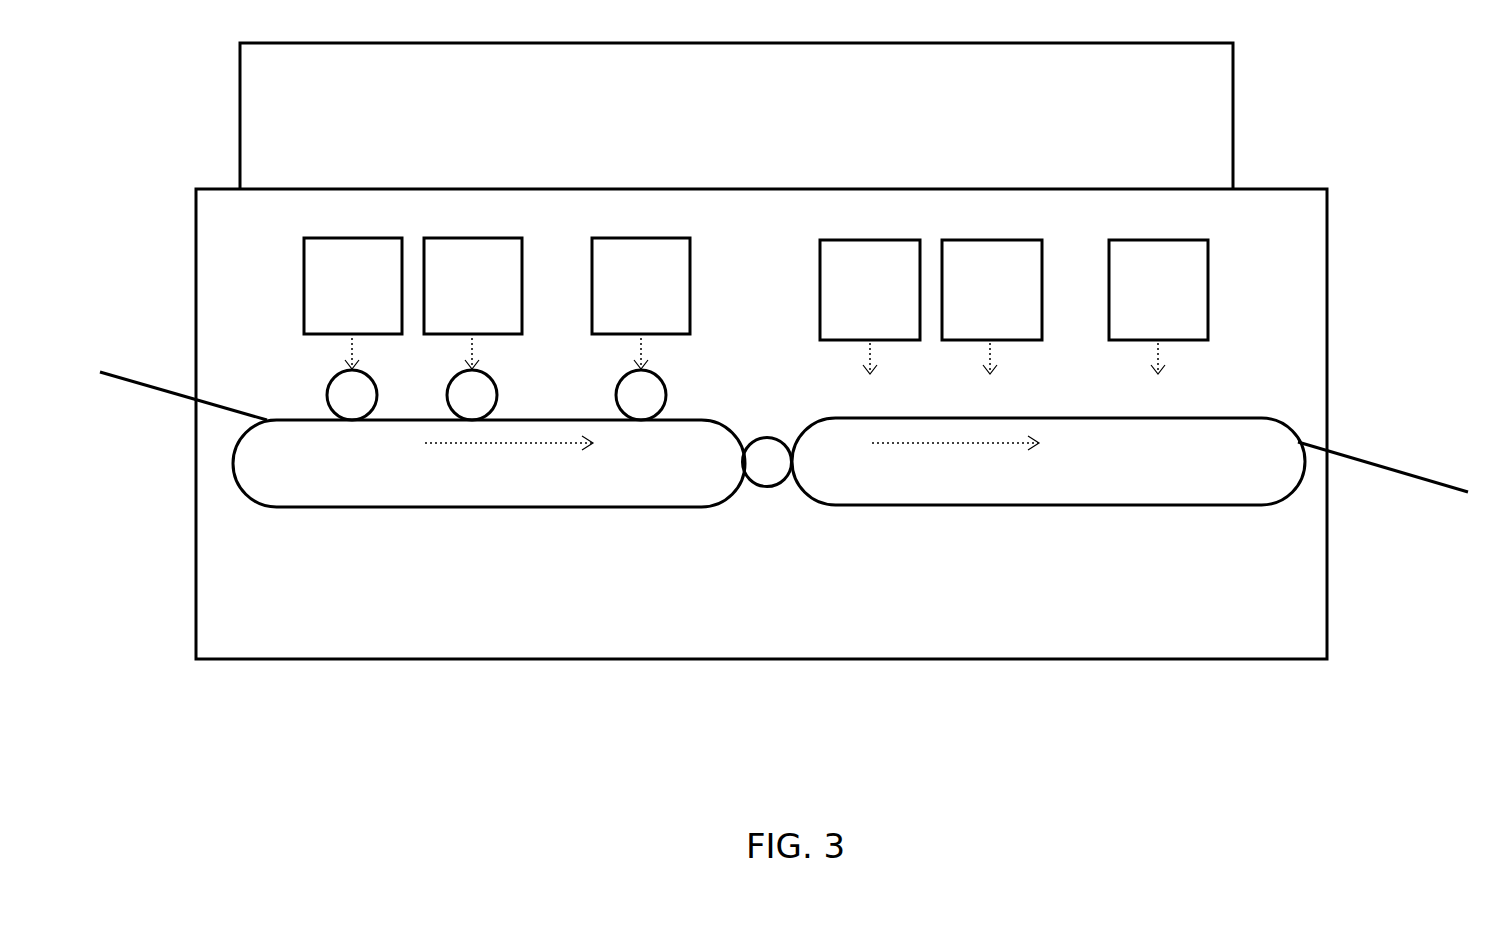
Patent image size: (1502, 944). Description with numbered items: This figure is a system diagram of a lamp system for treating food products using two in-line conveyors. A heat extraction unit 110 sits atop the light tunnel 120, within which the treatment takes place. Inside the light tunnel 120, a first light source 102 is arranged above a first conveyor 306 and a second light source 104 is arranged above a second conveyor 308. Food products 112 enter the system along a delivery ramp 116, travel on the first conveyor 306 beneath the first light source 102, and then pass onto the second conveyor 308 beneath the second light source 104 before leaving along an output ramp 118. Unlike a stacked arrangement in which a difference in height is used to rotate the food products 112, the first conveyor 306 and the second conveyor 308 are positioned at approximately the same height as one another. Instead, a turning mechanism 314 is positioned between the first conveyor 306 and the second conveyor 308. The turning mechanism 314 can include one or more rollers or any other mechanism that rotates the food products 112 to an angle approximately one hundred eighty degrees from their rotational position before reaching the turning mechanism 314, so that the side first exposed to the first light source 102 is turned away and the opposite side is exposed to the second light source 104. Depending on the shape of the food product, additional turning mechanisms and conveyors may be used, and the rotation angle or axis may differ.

The heat extraction unit 110 is at (736, 116).
The first light source 102 is at (455, 303).
The second light source 104 is at (896, 302).
The light tunnel 120 is at (1199, 299).
The food products 112 is at (463, 394).
The delivery ramp 116 is at (183, 377).
The output ramp 118 is at (1383, 454).
The first conveyor 306 is at (489, 463).
The second conveyor 308 is at (1048, 461).
The turning mechanism 314 is at (768, 487).